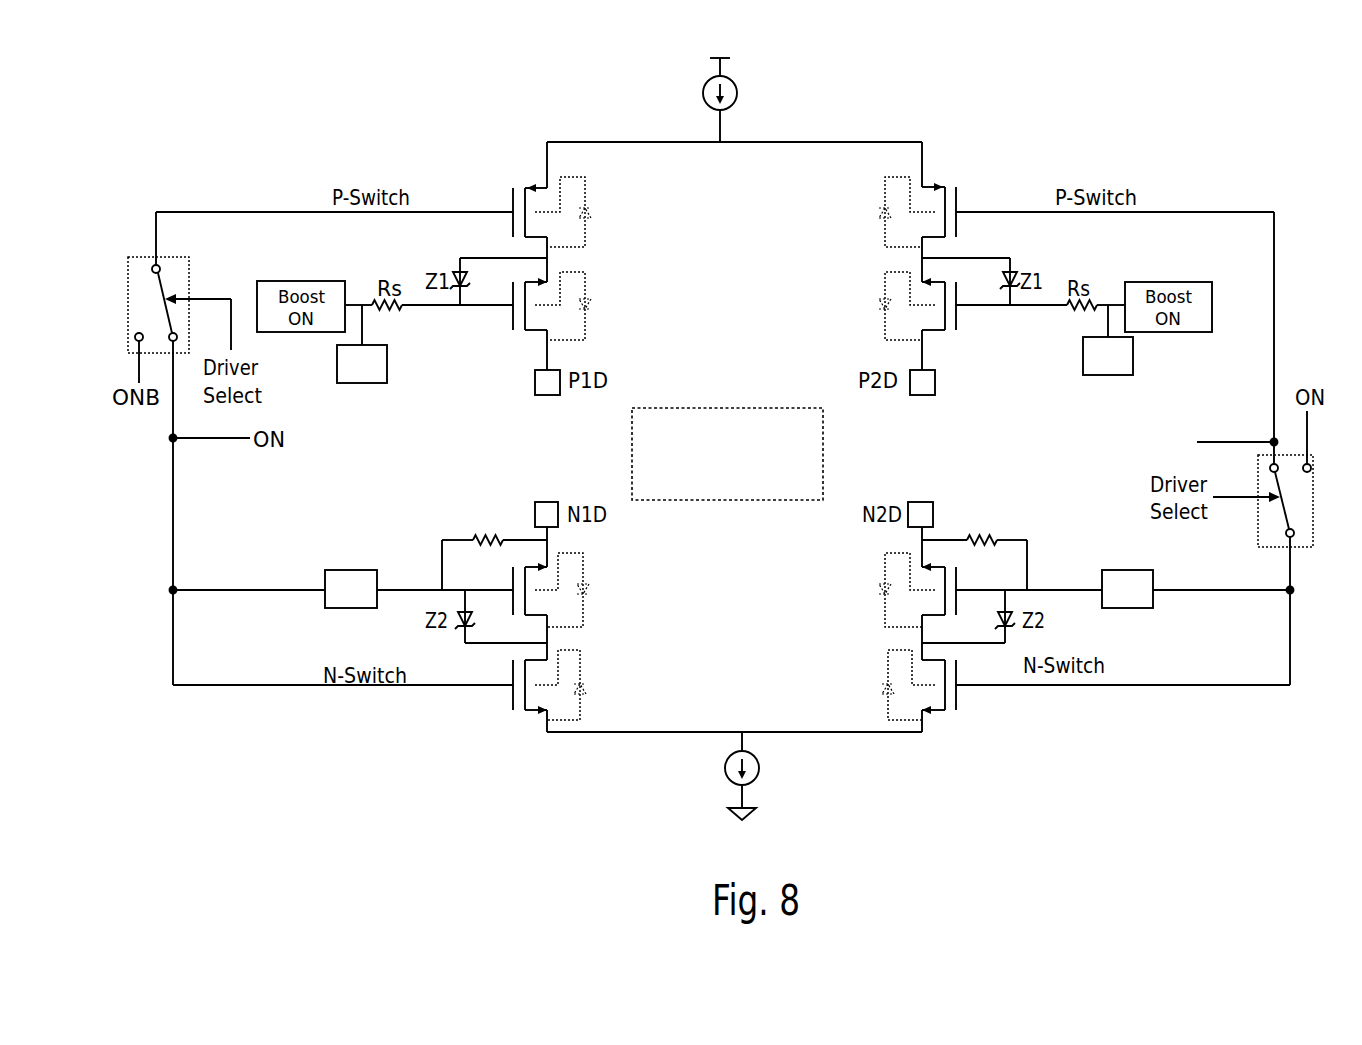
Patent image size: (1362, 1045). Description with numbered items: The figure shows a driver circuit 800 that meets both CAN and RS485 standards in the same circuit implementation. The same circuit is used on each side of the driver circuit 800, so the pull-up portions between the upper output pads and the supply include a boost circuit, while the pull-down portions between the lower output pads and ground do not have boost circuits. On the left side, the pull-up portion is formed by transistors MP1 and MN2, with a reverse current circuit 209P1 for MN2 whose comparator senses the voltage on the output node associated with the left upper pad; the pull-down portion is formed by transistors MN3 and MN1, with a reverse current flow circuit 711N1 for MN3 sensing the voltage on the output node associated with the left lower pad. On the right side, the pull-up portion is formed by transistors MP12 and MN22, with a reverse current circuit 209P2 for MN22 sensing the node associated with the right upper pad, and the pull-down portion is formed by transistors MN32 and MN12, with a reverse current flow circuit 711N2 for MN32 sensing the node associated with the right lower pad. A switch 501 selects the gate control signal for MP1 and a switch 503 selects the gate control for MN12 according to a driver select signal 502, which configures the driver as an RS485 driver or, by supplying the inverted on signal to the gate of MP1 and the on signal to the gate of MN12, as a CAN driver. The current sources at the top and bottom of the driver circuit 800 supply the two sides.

The driver circuit 800 is at (784, 441).
The switch 501 is at (190, 272).
The driver select signal 502 is at (232, 352).
The switch 503 is at (1305, 548).
The reverse current circuit 209P1 is at (387, 366).
The reverse current circuit 209P2 is at (1133, 357).
The reverse current flow circuit 711N1 is at (355, 570).
The reverse current flow circuit 711N2 is at (1126, 570).
The transistor MP1 is at (575, 212).
The transistor MN2 is at (579, 321).
The transistor MN3 is at (580, 606).
The transistor MN1 is at (575, 691).
The transistor MP12 is at (887, 212).
The transistor MN22 is at (885, 321).
The transistor MN32 is at (885, 606).
The transistor MN12 is at (885, 691).